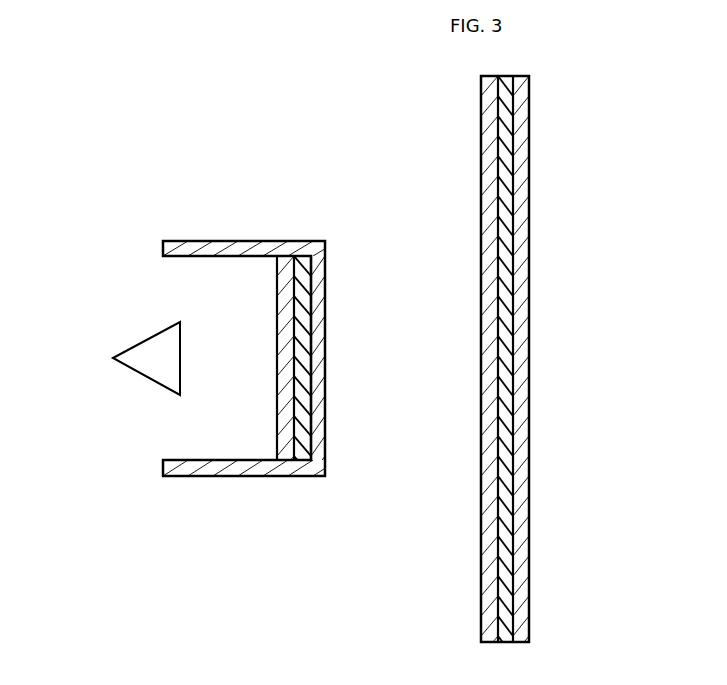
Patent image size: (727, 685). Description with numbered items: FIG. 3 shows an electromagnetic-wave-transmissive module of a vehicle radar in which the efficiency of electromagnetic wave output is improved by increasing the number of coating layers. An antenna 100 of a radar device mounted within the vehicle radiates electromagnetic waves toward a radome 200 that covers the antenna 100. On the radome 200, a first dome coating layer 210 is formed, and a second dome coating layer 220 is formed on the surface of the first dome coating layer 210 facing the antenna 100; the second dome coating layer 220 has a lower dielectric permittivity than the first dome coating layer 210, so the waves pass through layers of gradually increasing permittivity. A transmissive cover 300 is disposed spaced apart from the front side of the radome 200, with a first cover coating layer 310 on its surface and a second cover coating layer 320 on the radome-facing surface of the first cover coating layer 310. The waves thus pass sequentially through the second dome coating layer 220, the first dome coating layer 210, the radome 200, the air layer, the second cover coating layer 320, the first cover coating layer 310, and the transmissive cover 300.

The antenna 100 is at (147, 340).
The radome 200 is at (253, 242).
The first dome coating layer 210 is at (303, 410).
The second dome coating layer 220 is at (287, 415).
The transmissive cover 300 is at (514, 359).
The first cover coating layer 310 is at (505, 283).
The second cover coating layer 320 is at (490, 133).